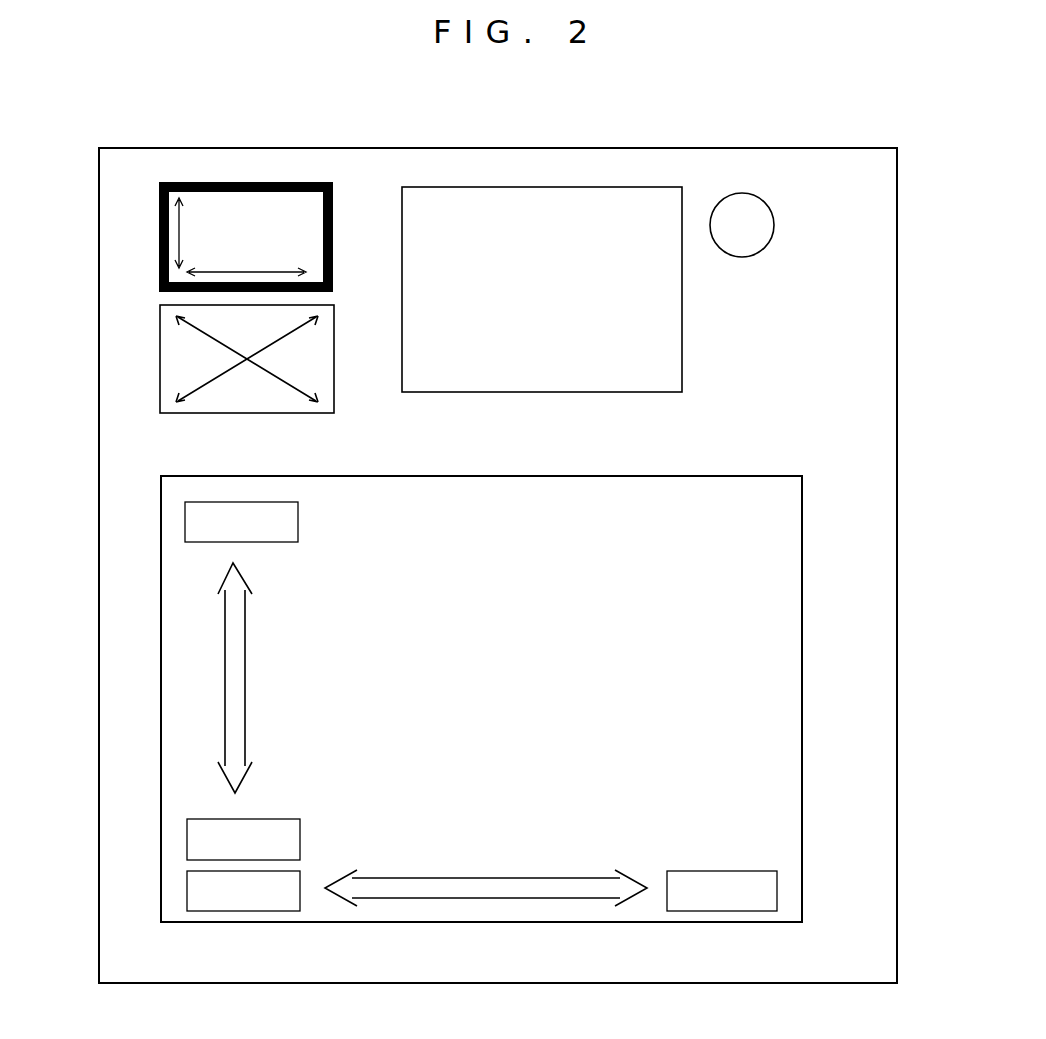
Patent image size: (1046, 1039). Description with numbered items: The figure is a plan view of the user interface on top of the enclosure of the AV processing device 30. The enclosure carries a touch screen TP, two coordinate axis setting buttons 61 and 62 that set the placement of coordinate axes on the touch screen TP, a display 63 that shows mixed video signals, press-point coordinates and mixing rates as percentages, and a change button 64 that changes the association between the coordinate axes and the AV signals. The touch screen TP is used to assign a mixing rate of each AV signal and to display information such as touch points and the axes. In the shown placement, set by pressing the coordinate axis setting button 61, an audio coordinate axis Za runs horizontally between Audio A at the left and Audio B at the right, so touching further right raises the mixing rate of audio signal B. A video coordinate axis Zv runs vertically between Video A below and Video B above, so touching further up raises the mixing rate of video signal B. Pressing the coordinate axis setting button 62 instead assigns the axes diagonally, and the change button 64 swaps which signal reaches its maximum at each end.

The AV processing device 30 is at (835, 148).
The coordinate axis setting button 61 is at (159, 215).
The coordinate axis setting button 62 is at (159, 350).
The display 63 is at (513, 187).
The change button 64 is at (742, 193).
The touch screen TP is at (802, 623).
The video coordinate axis Zv is at (225, 660).
The audio coordinate axis Za is at (497, 898).